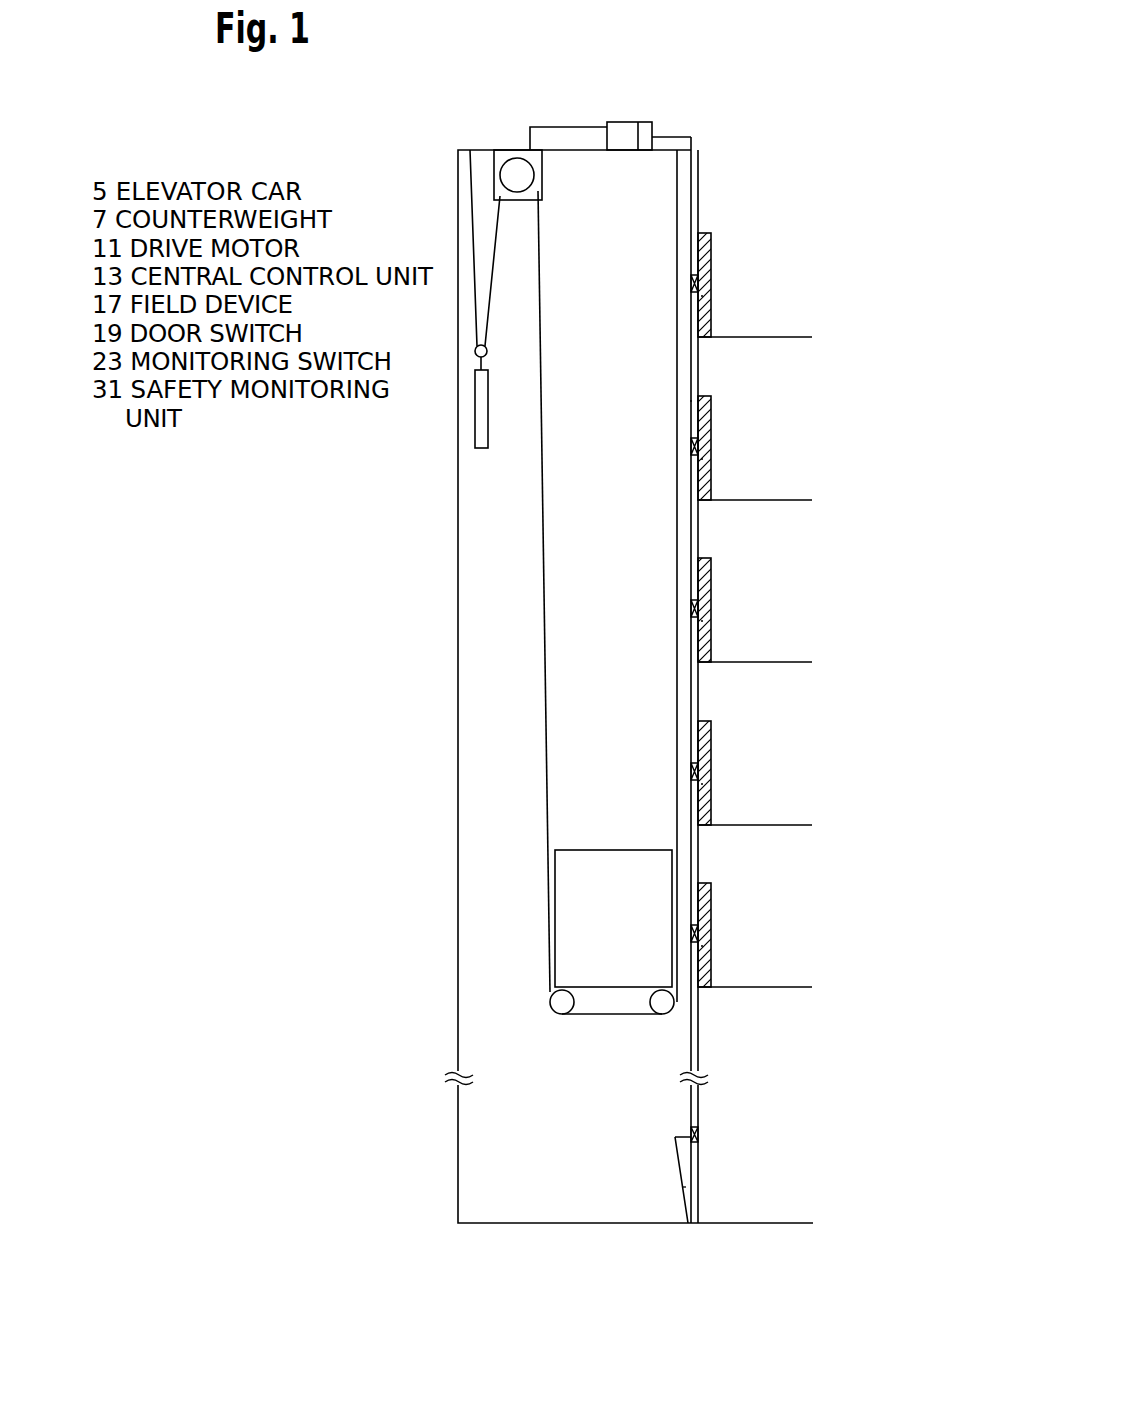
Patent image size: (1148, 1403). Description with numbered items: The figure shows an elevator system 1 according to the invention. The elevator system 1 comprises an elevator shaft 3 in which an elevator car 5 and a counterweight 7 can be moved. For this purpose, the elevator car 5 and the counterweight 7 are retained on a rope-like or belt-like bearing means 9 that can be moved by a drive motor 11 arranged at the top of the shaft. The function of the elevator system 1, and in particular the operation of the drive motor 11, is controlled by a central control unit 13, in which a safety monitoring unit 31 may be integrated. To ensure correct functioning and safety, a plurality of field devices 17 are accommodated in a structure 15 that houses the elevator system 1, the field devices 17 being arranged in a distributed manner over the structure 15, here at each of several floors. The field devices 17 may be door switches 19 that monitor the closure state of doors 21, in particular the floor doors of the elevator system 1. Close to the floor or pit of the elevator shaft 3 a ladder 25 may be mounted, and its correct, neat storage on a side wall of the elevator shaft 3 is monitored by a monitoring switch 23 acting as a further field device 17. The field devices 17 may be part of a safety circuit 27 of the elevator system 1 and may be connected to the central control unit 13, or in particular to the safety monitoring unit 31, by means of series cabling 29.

The elevator system 1 is at (827, 192).
The elevator shaft 3 is at (625, 625).
The elevator car 5 is at (625, 937).
The counterweight 7 is at (483, 442).
The bearing means 9 is at (541, 455).
The drive motor 11 is at (548, 188).
The central control unit 13 is at (627, 130).
The structure 15 is at (894, 310).
The field device 17 is at (699, 1132).
The door switch 19 is at (702, 946).
The door 21 is at (706, 901).
The monitoring switch 23 is at (697, 1143).
The ladder 25 is at (687, 1187).
The safety circuit 27 is at (694, 193).
The series cabling 29 is at (693, 165).
The safety monitoring unit 31 is at (645, 128).